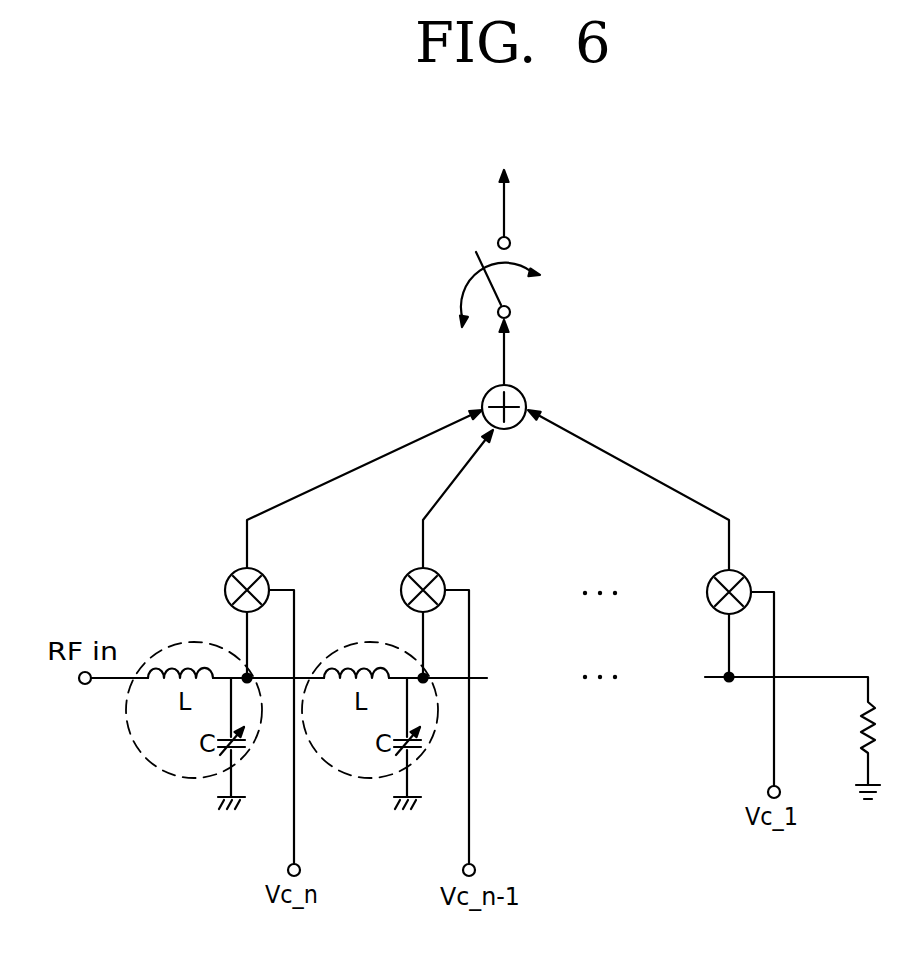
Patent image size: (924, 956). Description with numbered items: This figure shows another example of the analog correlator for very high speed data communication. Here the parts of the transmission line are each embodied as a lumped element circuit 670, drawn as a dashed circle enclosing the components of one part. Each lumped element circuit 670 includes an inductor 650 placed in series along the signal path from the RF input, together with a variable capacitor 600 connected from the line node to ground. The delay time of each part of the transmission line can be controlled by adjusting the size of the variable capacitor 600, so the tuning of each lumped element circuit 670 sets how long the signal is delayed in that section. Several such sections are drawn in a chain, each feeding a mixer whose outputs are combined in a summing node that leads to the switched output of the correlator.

The inductor 650 is at (180, 667).
The variable capacitor 600 is at (198, 747).
The lumped element circuit 670 is at (128, 723).